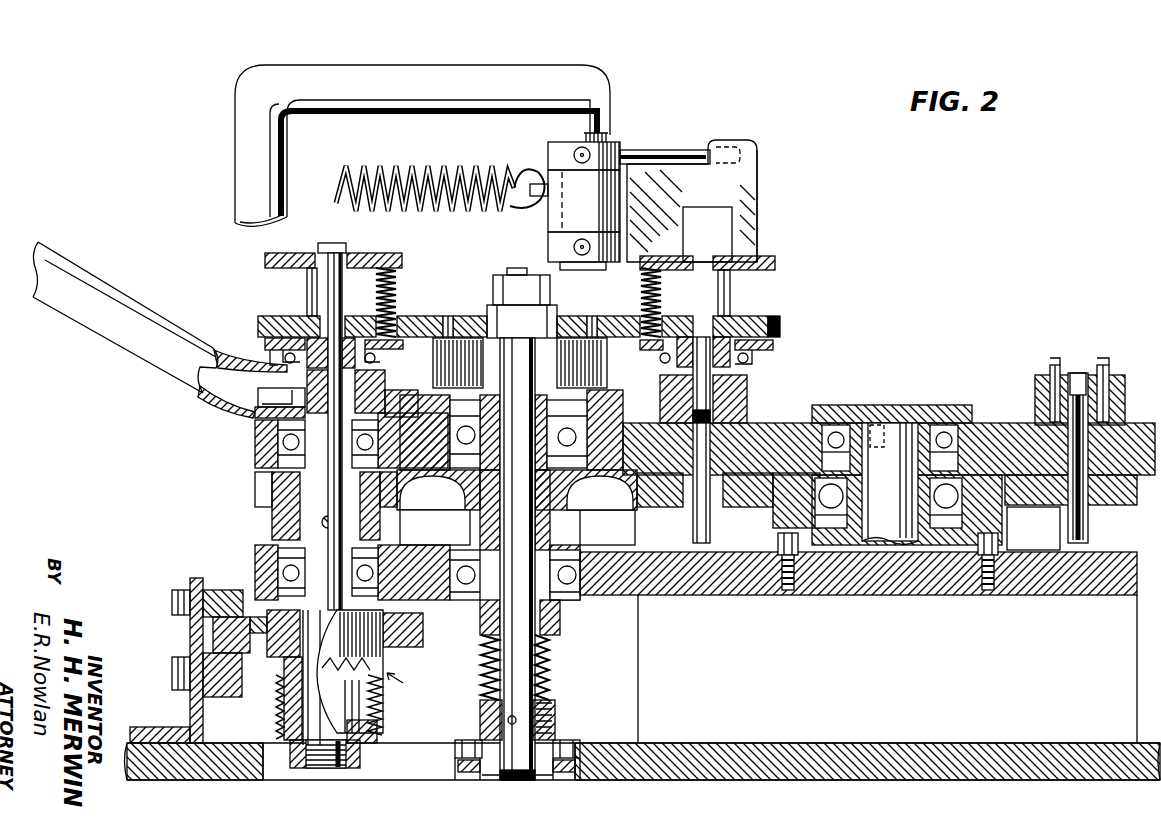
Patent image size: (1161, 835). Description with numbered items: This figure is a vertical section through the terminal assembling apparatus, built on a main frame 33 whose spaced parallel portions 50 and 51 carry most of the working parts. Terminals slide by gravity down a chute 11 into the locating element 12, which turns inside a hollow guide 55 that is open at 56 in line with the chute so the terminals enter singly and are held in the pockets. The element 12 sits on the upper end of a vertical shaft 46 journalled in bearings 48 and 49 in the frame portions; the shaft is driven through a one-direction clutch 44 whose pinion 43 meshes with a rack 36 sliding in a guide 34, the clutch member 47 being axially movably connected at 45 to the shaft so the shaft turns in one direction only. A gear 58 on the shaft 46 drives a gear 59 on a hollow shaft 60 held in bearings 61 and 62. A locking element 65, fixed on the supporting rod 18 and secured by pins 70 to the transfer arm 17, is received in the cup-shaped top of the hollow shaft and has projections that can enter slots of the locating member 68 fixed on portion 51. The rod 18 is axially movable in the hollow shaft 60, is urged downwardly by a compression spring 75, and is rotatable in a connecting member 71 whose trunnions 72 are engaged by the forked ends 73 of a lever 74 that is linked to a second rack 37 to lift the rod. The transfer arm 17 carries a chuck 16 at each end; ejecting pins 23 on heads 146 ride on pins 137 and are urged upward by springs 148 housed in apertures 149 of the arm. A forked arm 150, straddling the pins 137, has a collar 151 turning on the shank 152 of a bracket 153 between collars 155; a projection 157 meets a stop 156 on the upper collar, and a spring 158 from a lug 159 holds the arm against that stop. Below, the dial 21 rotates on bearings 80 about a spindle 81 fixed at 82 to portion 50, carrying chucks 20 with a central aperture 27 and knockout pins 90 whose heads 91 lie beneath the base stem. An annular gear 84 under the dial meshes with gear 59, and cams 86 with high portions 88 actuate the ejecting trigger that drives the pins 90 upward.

The chute 11 is at (72, 268).
The locating element 12 is at (378, 393).
The chuck 16 is at (285, 357).
The transfer arm 17 is at (421, 316).
The supporting rod 18 is at (536, 670).
The chuck 20 is at (740, 392).
The dial 21 is at (990, 425).
The ejecting pins 23 is at (307, 288).
The central aperture 27 is at (660, 410).
The main frame 33 is at (1137, 647).
The guide 34 is at (215, 578).
The rack 36 is at (190, 640).
The rack 37 is at (423, 633).
The pinion 43 is at (372, 662).
The one-direction clutch 44 is at (390, 680).
The axially movable connection 45 is at (276, 702).
The vertical shaft 46 is at (360, 750).
The clutch member 47 is at (380, 688).
The bearing 48 is at (256, 560).
The bearing 49 is at (266, 440).
The frame portion 50 is at (622, 595).
The frame portion 51 is at (255, 460).
The hollow guide 55 is at (388, 400).
The opening 56 is at (268, 400).
The gear 58 is at (272, 486).
The gear 59 is at (425, 500).
The hollow shaft 60 is at (575, 500).
The bearing 61 is at (560, 600).
The bearing 62 is at (605, 500).
The locking element 65 is at (545, 312).
The locating member 68 is at (604, 402).
The pins 70 is at (448, 316).
The connecting member 71 is at (550, 742).
The trunnions 72 is at (468, 740).
The forked ends 73 is at (455, 780).
The lever 74 is at (458, 764).
The compression spring 75 is at (482, 662).
The bearings 80 is at (836, 425).
The spindle 81 is at (890, 428).
The mounting 82 is at (786, 590).
The annular gear 84 is at (745, 510).
The cams 86 is at (778, 515).
The high portion 88 is at (1045, 550).
The knockout pins 90 is at (693, 520).
The head portion 91 is at (1082, 392).
The pins 137 is at (328, 253).
The heads 146 is at (265, 261).
The springs 148 is at (396, 290).
The apertures 149 is at (378, 350).
The forked arm 150 is at (757, 184).
The collar 151 is at (548, 222).
The shank 152 is at (602, 142).
The bracket 153 is at (464, 68).
The collars 155 is at (548, 150).
The stop 156 is at (658, 150).
The projection 157 is at (745, 142).
The spring 158 is at (412, 166).
The lug 159 is at (512, 206).